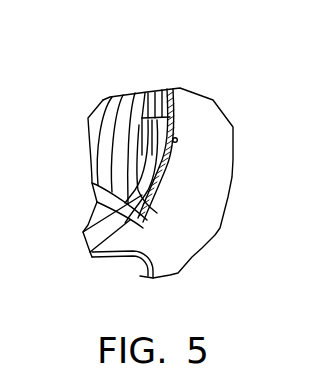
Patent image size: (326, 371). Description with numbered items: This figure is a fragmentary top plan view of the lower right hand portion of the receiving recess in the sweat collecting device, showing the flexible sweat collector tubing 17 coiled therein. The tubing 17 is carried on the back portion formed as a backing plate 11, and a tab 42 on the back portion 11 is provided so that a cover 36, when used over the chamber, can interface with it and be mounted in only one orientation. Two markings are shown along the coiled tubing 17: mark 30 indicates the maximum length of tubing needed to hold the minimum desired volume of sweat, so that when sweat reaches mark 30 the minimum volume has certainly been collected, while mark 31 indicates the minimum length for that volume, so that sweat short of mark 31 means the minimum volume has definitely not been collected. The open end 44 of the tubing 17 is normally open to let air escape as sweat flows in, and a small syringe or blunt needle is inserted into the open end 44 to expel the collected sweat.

The backing plate 11 is at (188, 100).
The sweat collector tubing 17 is at (142, 95).
The mark 30 is at (125, 188).
The mark 31 is at (138, 138).
The cover 36 is at (104, 108).
The tab 42 is at (178, 140).
The open end 44 is at (102, 230).